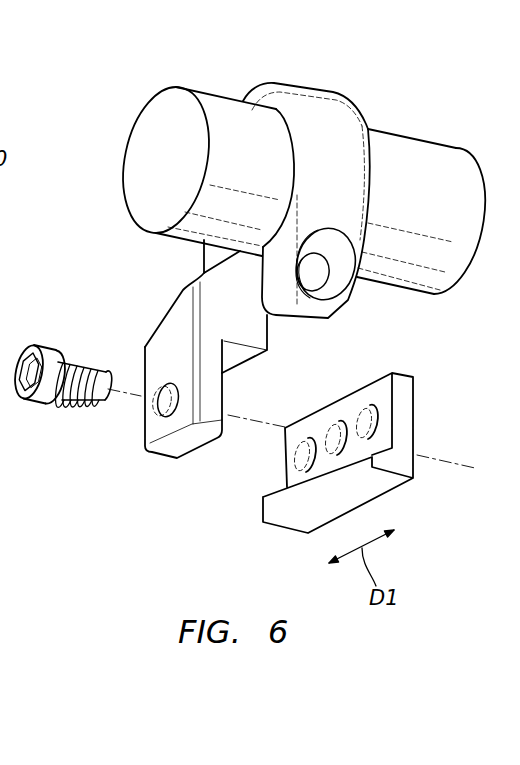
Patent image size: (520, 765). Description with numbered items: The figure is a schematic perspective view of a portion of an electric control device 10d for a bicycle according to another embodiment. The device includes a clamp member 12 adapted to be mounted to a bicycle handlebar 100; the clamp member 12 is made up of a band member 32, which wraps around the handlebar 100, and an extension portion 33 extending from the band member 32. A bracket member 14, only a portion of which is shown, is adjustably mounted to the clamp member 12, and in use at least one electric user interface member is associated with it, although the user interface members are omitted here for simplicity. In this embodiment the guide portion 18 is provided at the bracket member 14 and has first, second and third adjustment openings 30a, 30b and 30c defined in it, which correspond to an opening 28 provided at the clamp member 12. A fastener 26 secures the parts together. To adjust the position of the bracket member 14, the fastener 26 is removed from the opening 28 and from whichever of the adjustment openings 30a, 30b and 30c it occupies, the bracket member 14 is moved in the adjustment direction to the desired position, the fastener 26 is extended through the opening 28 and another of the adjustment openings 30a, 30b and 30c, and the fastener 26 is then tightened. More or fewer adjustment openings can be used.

The electric control device 10d is at (447, 121).
The bicycle handlebar 100 is at (476, 175).
The band member 32 is at (326, 110).
The clamp member 12 is at (184, 387).
The extension portion 33 is at (154, 350).
The fastener 26 is at (65, 399).
The opening 28 is at (166, 404).
The guide portion 18 is at (368, 425).
The bracket member 14 is at (410, 382).
The first adjustment opening 30a is at (304, 452).
The second adjustment opening 30b is at (335, 440).
The third adjustment opening 30c is at (368, 424).